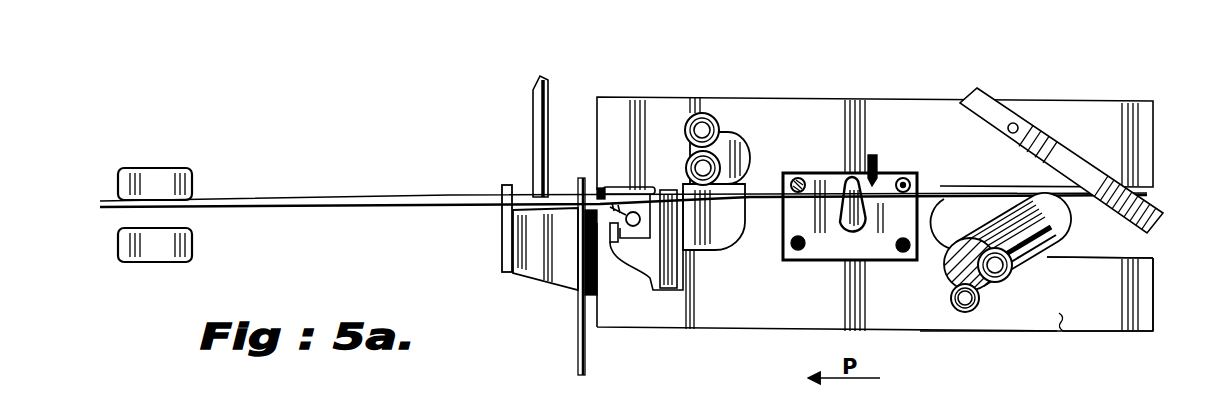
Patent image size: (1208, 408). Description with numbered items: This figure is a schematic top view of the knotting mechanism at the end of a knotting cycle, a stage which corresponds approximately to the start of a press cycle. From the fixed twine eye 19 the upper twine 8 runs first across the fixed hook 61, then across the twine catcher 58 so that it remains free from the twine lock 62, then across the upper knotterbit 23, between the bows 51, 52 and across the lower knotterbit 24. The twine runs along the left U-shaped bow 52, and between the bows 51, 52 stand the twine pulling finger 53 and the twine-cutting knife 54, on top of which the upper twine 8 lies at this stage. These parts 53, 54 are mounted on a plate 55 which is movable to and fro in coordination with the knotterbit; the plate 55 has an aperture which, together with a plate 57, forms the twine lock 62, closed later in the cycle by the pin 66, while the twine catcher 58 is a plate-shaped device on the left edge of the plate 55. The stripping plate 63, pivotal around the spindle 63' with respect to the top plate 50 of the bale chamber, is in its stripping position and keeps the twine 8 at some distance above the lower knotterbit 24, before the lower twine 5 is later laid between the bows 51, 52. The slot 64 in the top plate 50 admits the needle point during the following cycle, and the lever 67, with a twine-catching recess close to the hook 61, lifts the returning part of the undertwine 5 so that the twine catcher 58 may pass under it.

The lower twine 5 is at (972, 192).
The upper twine 8 is at (384, 203).
The fixed twine eye 19 is at (163, 176).
The upper knotterbit 23 is at (762, 152).
The lower knotterbit 24 is at (945, 281).
The top plate of the bale chamber 50 is at (1060, 328).
The bow 51 is at (898, 247).
The U-shaped bow 52 is at (898, 182).
The twine pulling finger 53 is at (840, 214).
The twine-cutting knife 54 is at (888, 193).
The plate 55 is at (655, 112).
The plate 57 is at (672, 272).
The twine catcher 58 is at (585, 295).
The fixed hook 61 is at (502, 232).
The twine lock 62 is at (630, 193).
The stripping plate 63 is at (1061, 160).
The spindle 63' is at (1036, 103).
The slot 64 is at (1140, 262).
The pin 66 is at (588, 252).
The lever 67 is at (546, 88).